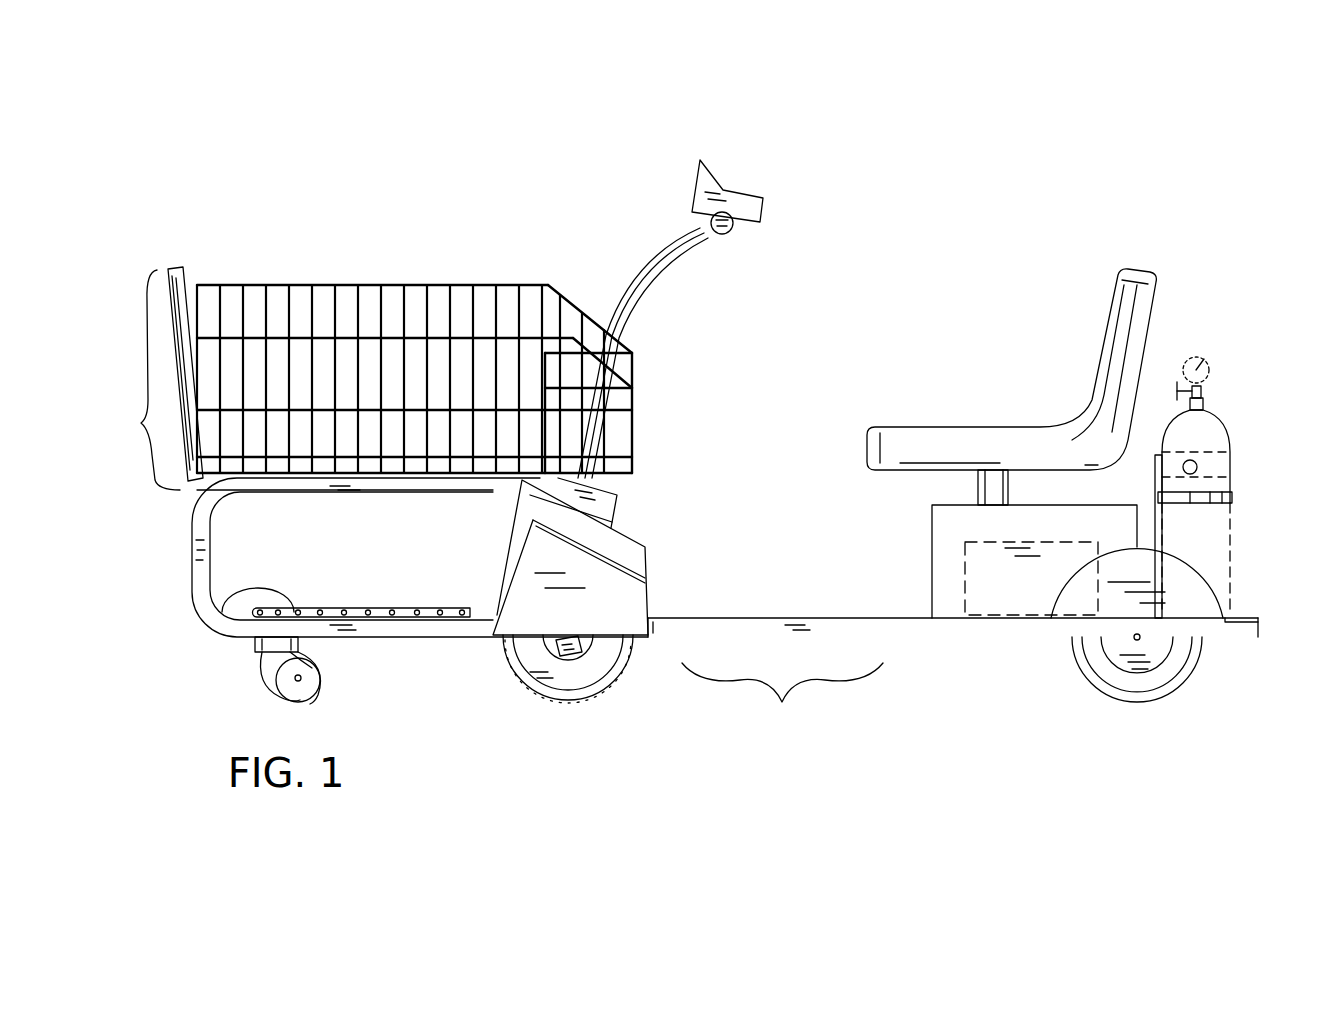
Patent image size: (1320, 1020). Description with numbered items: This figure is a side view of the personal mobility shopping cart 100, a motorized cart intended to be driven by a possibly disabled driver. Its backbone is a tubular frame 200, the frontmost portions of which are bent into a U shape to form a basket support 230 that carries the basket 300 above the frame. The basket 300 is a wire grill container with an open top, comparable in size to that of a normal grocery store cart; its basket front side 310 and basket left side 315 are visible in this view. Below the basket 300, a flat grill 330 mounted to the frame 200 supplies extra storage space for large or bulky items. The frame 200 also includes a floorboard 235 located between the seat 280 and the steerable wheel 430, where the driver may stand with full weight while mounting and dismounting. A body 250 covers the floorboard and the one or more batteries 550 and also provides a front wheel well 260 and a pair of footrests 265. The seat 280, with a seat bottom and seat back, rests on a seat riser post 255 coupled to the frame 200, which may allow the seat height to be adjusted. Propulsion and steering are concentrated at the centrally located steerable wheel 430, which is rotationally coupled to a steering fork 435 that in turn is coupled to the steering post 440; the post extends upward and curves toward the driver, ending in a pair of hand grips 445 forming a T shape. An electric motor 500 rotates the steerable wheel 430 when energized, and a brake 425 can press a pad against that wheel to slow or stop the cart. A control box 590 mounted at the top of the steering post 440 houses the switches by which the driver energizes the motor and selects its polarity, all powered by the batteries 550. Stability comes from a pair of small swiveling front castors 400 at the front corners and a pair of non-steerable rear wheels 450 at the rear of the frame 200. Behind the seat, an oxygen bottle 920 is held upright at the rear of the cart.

The personal mobility shopping cart 100 is at (232, 140).
The frame 200 is at (463, 632).
The basket support 230 is at (262, 488).
The floorboard 235 is at (782, 705).
The body 250 is at (990, 600).
The seat riser post 255 is at (985, 490).
The front wheel well 260 is at (620, 530).
The footrests 265 is at (632, 568).
The seat 280 is at (880, 233).
The basket 300 is at (130, 380).
The basket front side 310 is at (178, 268).
The basket left side 315 is at (370, 287).
The flat grill 330 is at (218, 618).
The front castors 400 is at (300, 670).
The brake 425 is at (543, 657).
The steerable wheel 430 is at (593, 697).
The steering fork 435 is at (580, 650).
The steering post 440 is at (636, 256).
The hand grips 445 is at (724, 234).
The rear wheels 450 is at (1177, 690).
The electric motor 500 is at (565, 672).
The batteries 550 is at (1018, 615).
The control box 590 is at (700, 160).
The oxygen bottle 920 is at (1212, 412).